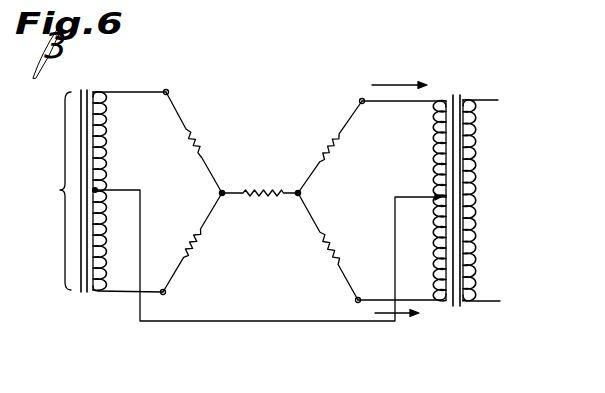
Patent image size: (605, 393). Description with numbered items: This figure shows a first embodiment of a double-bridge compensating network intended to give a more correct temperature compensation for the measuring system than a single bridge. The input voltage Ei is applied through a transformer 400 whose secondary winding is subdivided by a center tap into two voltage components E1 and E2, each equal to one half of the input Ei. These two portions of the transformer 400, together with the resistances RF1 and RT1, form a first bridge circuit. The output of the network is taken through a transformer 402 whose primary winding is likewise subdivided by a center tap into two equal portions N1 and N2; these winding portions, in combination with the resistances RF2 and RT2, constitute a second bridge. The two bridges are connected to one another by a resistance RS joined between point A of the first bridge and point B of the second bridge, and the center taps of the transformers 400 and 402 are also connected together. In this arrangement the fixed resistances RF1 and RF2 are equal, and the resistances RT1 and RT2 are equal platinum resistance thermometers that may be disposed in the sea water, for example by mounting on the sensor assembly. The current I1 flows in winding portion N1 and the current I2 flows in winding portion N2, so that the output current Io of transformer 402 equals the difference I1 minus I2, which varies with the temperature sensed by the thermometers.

The transformer 400 is at (95, 87).
The transformer 402 is at (463, 91).
The voltage component E1 is at (111, 142).
The voltage component E2 is at (111, 241).
The input Ei is at (52, 191).
The resistance RF1 is at (198, 148).
The resistance RT1 is at (190, 245).
The resistance RS is at (254, 190).
The resistance RF2 is at (324, 157).
The resistance RT2 is at (336, 259).
The point A is at (222, 193).
The point B is at (298, 193).
The current I1 is at (411, 88).
The current I2 is at (408, 318).
The primary winding portion N1 is at (425, 149).
The primary winding portion N2 is at (425, 248).
The output current Io is at (494, 101).